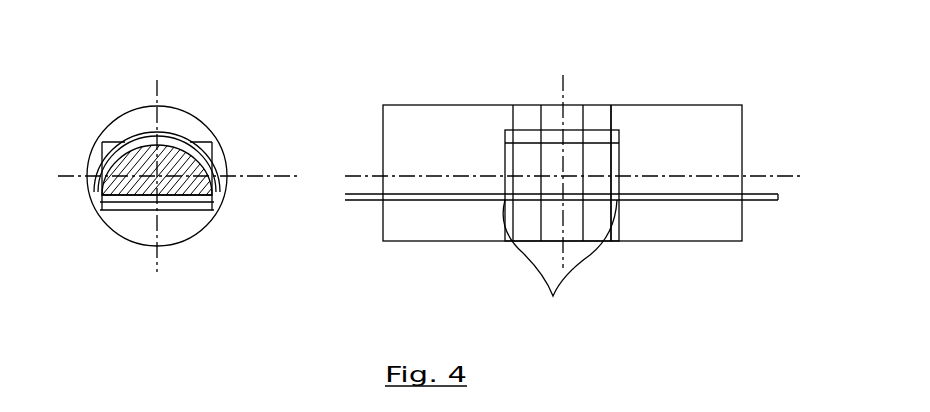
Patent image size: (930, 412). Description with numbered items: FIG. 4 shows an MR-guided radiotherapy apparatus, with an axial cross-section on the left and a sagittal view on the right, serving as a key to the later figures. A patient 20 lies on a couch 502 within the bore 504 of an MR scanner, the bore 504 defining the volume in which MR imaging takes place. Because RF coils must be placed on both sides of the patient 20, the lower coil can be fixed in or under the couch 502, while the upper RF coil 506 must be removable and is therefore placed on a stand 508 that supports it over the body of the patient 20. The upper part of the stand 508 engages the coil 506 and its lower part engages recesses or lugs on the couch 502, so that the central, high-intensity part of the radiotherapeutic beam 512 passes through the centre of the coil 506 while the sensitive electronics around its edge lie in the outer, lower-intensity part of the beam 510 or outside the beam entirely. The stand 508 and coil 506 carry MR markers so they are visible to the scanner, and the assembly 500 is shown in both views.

The patient 20 is at (163, 170).
The fiber termination assembly 500 is at (147, 192).
The couch 502 is at (182, 213).
The bore 504 is at (208, 220).
The RF coil 506 is at (168, 130).
The stand 508 is at (117, 140).
The outer lower-intensity part of the beam 510 is at (602, 122).
The central high-intensity part of the radiotherapeutic beam 512 is at (572, 115).